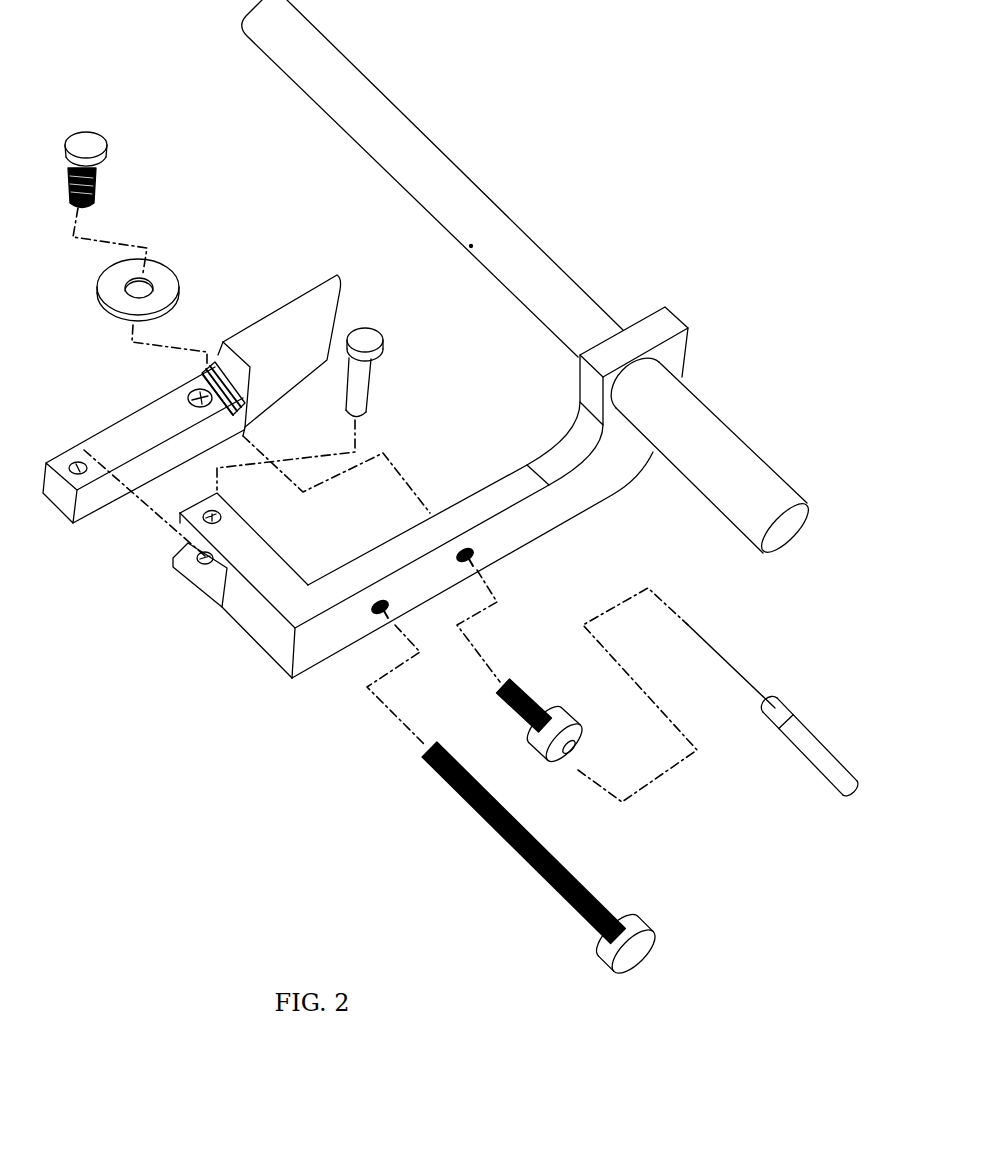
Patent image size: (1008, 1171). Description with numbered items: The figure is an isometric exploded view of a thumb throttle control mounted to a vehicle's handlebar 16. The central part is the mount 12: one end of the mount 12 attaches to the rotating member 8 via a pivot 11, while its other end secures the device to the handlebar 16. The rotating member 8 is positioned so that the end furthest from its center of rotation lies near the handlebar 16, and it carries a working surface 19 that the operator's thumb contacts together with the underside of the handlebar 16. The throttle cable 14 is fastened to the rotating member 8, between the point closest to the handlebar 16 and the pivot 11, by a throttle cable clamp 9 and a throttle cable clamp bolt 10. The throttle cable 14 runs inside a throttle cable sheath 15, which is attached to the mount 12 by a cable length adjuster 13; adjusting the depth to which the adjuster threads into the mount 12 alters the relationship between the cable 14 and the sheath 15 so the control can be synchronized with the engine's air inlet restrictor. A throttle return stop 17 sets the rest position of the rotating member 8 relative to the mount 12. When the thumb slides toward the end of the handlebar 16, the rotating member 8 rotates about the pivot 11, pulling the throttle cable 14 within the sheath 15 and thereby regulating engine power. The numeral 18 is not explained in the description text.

The rotating member 8 is at (108, 490).
The throttle cable clamp 9 is at (153, 272).
The throttle cable clamp bolt 10 is at (95, 148).
The pivot 11 is at (362, 377).
The mount 12 is at (510, 532).
The cable length adjuster 13 is at (570, 767).
The throttle cable 14 is at (737, 668).
The throttle cable sheath 15 is at (838, 755).
The handlebar 16 is at (443, 184).
The throttle return stop 17 is at (510, 853).
The hole 18 is at (471, 248).
The working surface 19 is at (310, 338).